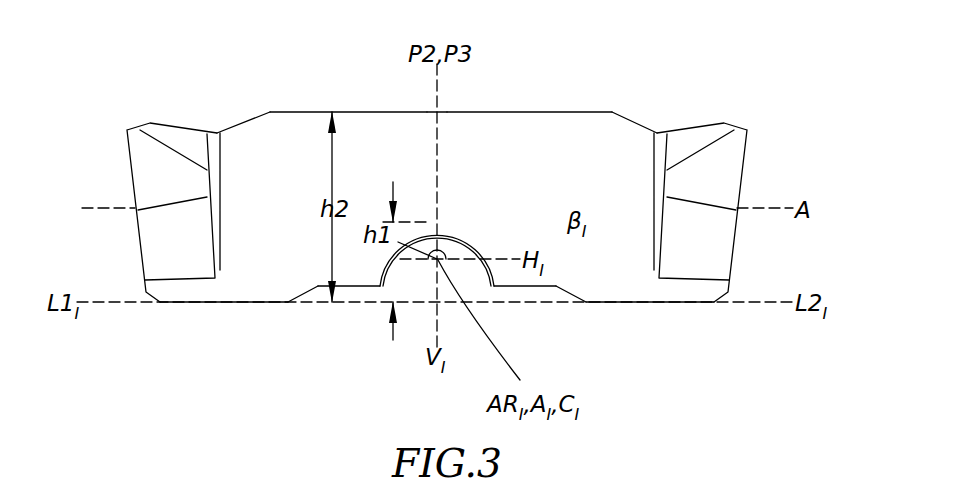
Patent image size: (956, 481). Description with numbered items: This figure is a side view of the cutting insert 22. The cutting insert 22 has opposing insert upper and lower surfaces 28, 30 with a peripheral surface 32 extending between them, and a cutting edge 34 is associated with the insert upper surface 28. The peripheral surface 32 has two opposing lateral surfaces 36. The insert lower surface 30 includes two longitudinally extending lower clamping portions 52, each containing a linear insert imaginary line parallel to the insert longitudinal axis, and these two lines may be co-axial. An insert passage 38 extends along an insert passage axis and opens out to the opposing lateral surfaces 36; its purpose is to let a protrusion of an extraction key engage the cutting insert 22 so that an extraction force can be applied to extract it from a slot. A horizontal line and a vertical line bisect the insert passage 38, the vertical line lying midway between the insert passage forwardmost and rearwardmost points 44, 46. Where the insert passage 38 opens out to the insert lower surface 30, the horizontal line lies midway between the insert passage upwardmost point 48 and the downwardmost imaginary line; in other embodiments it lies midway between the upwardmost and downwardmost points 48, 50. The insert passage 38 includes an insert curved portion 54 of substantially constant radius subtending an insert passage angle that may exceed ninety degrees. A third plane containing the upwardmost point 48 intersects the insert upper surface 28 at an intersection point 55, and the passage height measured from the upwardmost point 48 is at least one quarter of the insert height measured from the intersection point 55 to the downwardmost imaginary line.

The cutting insert 22 is at (175, 65).
The insert upper surface 28 is at (337, 85).
The insert lower surface 30 is at (638, 337).
The peripheral surface 32 is at (513, 140).
The cutting edge 34 is at (127, 128).
The lateral surfaces 36 is at (263, 133).
The insert passage 38 is at (413, 340).
The insert passage forwardmost point 44 is at (381, 292).
The insert passage rearwardmost point 46 is at (492, 282).
The insert passage upwardmost point 48 is at (443, 221).
The insert passage downwardmost point 50 is at (440, 303).
The lower clamping portion 52 is at (185, 303).
The insert curved portion 54 is at (437, 259).
The intersection point 55 is at (437, 112).